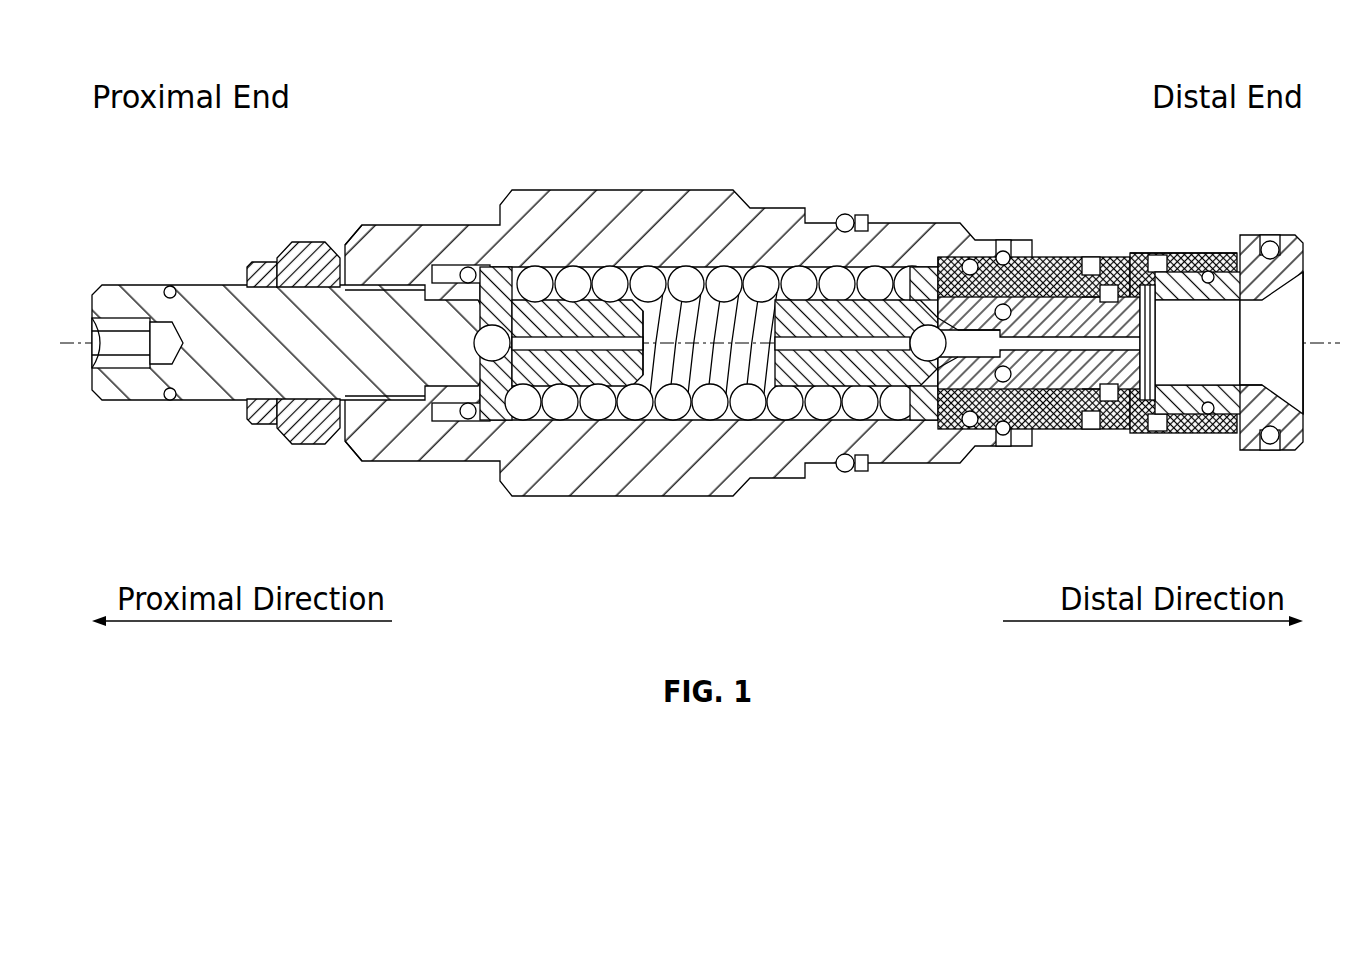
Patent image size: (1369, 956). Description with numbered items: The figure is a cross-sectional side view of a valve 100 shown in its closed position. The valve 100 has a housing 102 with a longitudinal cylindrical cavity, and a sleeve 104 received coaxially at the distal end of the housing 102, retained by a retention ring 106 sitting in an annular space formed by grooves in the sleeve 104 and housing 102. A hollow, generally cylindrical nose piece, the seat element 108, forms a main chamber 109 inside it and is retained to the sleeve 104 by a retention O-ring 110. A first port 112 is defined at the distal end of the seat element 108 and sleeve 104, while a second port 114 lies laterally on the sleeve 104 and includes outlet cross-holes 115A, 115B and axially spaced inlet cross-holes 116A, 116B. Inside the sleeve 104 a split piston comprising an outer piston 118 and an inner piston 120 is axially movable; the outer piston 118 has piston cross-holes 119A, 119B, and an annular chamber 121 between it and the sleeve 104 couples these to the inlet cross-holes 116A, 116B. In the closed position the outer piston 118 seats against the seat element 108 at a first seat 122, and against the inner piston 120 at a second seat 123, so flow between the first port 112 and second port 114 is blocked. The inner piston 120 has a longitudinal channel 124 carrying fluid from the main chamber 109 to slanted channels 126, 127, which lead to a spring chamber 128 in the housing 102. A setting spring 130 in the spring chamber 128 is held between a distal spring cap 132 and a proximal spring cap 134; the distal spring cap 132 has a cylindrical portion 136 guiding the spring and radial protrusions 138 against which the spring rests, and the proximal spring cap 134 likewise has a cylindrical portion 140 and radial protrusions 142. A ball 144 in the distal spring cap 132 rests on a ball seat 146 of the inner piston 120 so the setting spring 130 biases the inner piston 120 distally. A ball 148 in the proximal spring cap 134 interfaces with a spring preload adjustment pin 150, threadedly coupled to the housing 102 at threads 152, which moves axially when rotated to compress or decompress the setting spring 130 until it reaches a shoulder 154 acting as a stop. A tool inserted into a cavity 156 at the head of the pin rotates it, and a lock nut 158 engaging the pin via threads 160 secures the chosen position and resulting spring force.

The valve 100 is at (451, 74).
The housing 102 is at (657, 190).
The sleeve 104 is at (1205, 255).
The retention ring 106 is at (1003, 251).
The seat element 108 is at (1290, 248).
The main chamber 109 is at (1247, 392).
The retention O-ring 110 is at (1208, 414).
The first port 112 is at (1306, 400).
The second port 114 is at (1139, 240).
The outlet cross-hole 115A is at (1170, 262).
The outlet cross-hole 115B is at (1165, 425).
The inlet cross-hole 116A is at (1085, 260).
The inlet cross-hole 116B is at (1090, 428).
The outer piston 118 is at (1112, 284).
The piston cross-hole 119A is at (1092, 285).
The piston cross-hole 119B is at (1112, 402).
The inner piston 120 is at (972, 375).
The annular chamber 121 is at (1086, 409).
The first seat 122 is at (1270, 243).
The second seat 123 is at (1123, 322).
The longitudinal channel 124 is at (1024, 362).
The slanted channel 126 is at (963, 306).
The slanted channel 127 is at (944, 386).
The spring chamber 128 is at (930, 260).
The setting spring 130 is at (766, 284).
The distal spring cap 132 is at (785, 382).
The proximal spring cap 134 is at (636, 395).
The cylindrical portion 136 is at (822, 370).
The radial protrusions 138 is at (920, 283).
The cylindrical portion 140 is at (593, 370).
The radial protrusions 142 is at (503, 403).
The ball 144 is at (922, 352).
The ball seat 146 is at (948, 311).
The ball 148 is at (490, 352).
The spring preload adjustment pin 150 is at (195, 410).
The threads 152 is at (374, 280).
The shoulder 154 is at (414, 426).
The cavity 156 is at (130, 330).
The lock nut 158 is at (312, 241).
The threads 160 is at (275, 272).